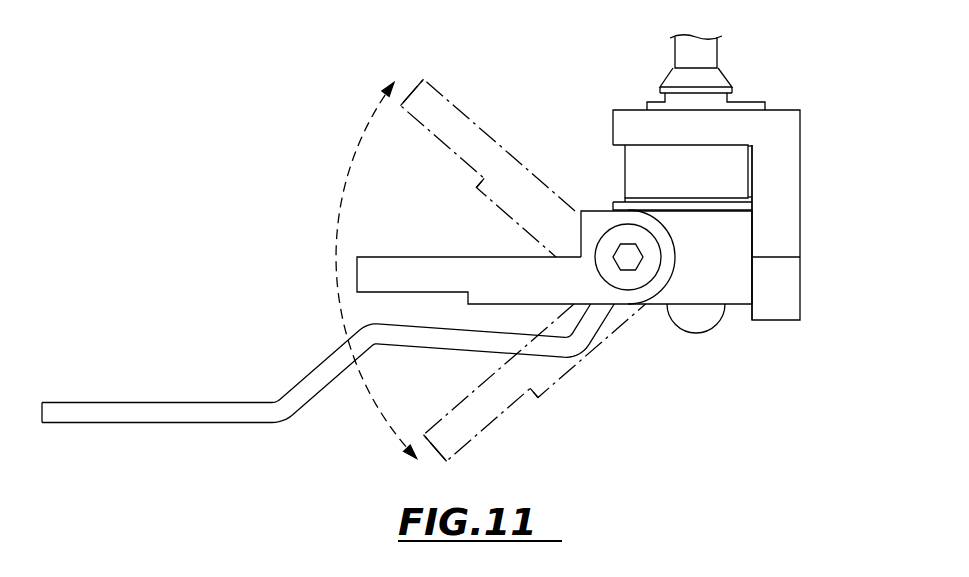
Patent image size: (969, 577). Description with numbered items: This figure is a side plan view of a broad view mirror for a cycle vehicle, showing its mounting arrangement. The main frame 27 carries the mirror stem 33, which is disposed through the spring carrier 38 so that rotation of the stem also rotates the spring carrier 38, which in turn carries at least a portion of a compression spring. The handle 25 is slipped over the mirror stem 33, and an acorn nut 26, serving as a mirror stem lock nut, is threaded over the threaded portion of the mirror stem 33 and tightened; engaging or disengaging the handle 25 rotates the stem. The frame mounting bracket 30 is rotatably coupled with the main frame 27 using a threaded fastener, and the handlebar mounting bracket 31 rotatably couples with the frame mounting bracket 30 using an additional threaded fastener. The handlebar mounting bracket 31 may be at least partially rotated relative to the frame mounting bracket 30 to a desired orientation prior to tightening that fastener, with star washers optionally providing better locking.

The handle 25 is at (175, 412).
The handlebar mounting bracket 31 is at (432, 123).
The frame mounting bracket 30 is at (723, 270).
The acorn nut 26 is at (685, 323).
The main frame 27 is at (796, 127).
The spring carrier 38 is at (636, 161).
The mirror stem 33 is at (707, 50).